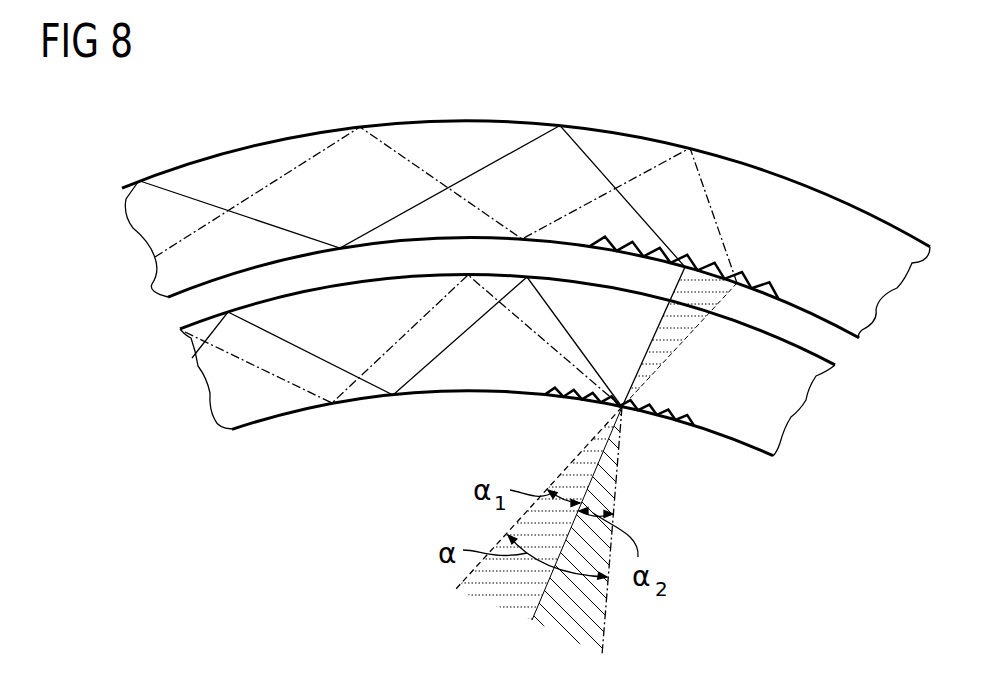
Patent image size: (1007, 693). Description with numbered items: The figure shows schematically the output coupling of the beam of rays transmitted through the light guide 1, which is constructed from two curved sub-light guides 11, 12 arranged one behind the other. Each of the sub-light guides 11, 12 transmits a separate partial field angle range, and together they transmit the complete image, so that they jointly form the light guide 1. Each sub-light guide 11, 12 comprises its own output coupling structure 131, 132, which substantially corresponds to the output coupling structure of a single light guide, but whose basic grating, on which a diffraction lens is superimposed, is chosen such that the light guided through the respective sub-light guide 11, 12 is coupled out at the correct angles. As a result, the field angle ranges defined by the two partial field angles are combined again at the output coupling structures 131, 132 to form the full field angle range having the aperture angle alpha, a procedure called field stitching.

The light guide 1 is at (637, 109).
The sub-light guide 11 is at (147, 222).
The sub-light guide 12 is at (220, 388).
The output coupling structure 131 is at (753, 290).
The output coupling structure 132 is at (664, 423).